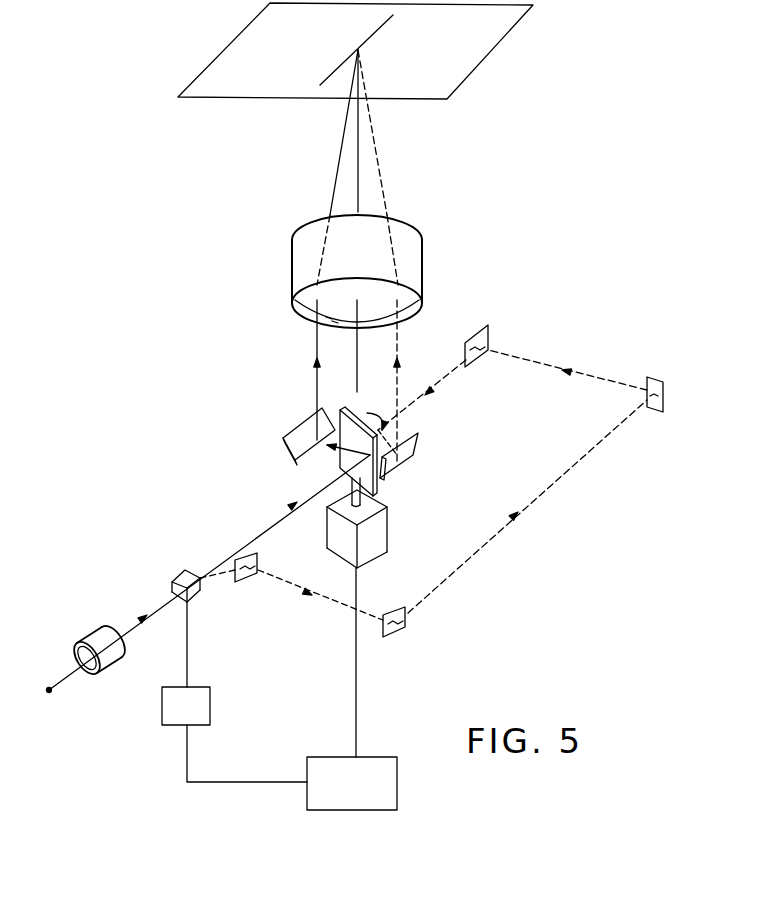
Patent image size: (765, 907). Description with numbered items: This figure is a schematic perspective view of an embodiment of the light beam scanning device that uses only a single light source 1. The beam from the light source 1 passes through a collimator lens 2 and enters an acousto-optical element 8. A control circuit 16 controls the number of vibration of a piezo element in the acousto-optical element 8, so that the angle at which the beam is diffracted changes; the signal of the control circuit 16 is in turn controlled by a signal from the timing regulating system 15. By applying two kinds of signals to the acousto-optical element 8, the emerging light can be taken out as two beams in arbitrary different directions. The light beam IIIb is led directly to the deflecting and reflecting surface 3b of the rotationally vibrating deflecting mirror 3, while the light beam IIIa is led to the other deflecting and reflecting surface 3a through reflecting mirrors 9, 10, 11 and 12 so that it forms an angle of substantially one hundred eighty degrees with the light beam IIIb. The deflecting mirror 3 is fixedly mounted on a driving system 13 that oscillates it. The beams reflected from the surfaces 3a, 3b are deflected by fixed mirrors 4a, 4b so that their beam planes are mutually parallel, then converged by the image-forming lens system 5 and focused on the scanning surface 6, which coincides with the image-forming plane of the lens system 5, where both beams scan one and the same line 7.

The light source 1 is at (50, 692).
The collimator lens 2 is at (118, 658).
The deflecting mirror 3 is at (350, 411).
The deflecting and reflecting surface 3a is at (377, 440).
The deflecting and reflecting surface 3b is at (348, 473).
The fixed mirror 4a is at (417, 450).
The fixed mirror 4b is at (283, 450).
The image-forming lens system 5 is at (417, 248).
The scanning surface 6 is at (477, 60).
The line 7 is at (380, 30).
The acousto-optical element 8 is at (180, 572).
The reflecting mirror 9 is at (248, 575).
The reflecting mirror 10 is at (407, 625).
The reflecting mirror 11 is at (662, 397).
The reflecting mirror 12 is at (483, 333).
The driving system 13 is at (385, 538).
The timing regulating system 15 is at (330, 762).
The control circuit 16 is at (207, 705).
The light beam IIIa is at (223, 575).
The light beam IIIb is at (245, 540).